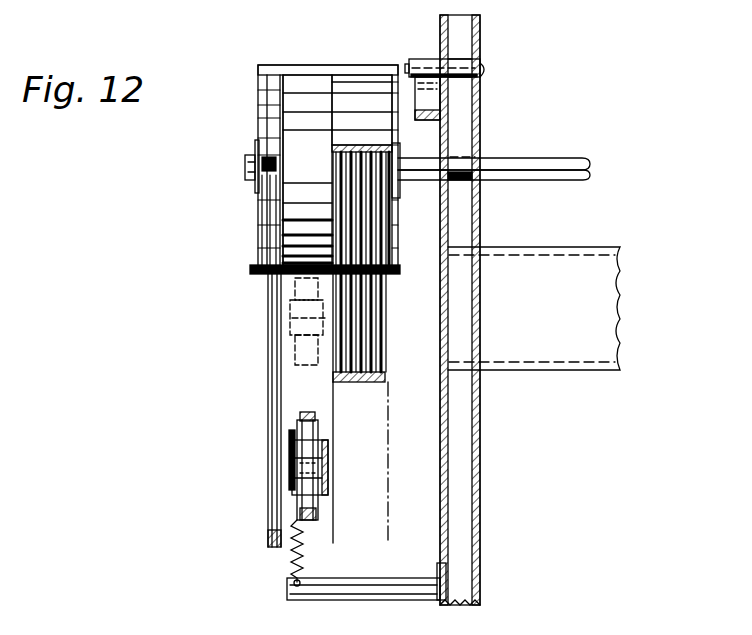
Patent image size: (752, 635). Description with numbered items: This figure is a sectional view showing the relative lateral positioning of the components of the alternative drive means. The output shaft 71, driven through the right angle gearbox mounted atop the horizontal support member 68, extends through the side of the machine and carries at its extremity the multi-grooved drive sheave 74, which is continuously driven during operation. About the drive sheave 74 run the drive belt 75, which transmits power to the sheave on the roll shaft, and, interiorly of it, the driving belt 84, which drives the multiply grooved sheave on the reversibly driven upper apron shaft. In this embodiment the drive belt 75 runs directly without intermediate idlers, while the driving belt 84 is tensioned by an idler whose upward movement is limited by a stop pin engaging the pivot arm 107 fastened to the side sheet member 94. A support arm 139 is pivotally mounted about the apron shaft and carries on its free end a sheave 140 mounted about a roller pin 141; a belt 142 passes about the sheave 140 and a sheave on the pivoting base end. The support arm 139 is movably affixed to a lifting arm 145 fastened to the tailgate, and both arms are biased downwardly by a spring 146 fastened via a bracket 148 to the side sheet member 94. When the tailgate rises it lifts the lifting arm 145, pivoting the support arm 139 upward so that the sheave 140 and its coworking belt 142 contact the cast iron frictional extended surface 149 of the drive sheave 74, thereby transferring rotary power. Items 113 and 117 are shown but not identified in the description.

The multi-grooved drive sheave 74 is at (258, 72).
The cast iron frictional extended surface 149 is at (334, 143).
The driving belt 84 is at (376, 108).
The output shaft 71 is at (245, 165).
The side sheet member 94 is at (440, 492).
The mounting bracket 113 is at (430, 59).
The pivot arm 107 is at (415, 103).
The pivot pin 117 is at (482, 72).
The horizontal support member 68 is at (622, 318).
The drive belt 75 is at (268, 373).
The roller pin 141 is at (292, 324).
The belt 142 is at (308, 418).
The lifting arm 145 is at (295, 438).
The support arm 139 is at (328, 455).
The sheave 140 is at (318, 503).
The spring 146 is at (292, 566).
The bracket 148 is at (348, 580).